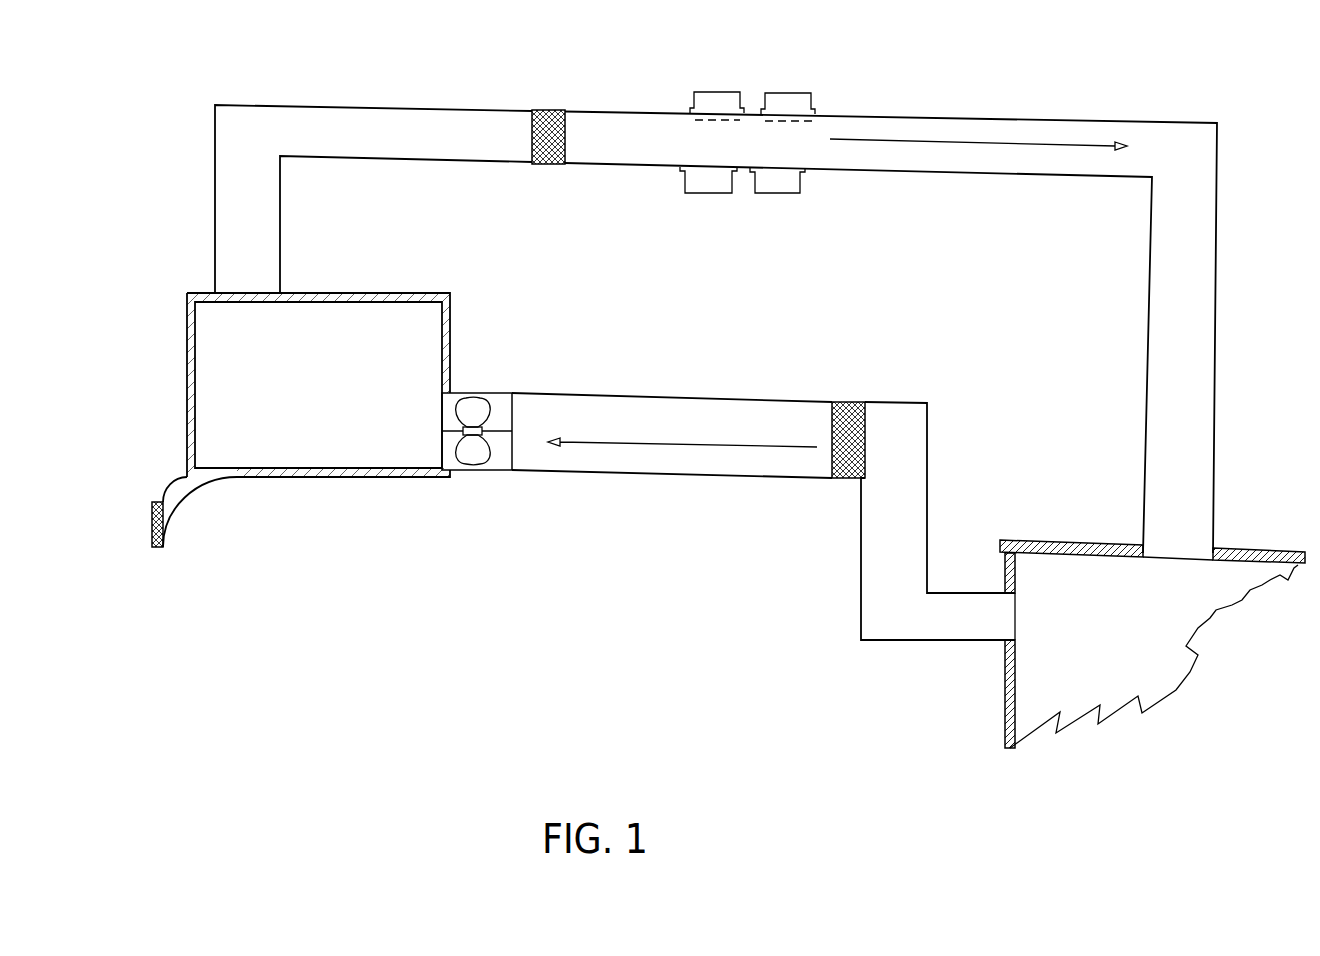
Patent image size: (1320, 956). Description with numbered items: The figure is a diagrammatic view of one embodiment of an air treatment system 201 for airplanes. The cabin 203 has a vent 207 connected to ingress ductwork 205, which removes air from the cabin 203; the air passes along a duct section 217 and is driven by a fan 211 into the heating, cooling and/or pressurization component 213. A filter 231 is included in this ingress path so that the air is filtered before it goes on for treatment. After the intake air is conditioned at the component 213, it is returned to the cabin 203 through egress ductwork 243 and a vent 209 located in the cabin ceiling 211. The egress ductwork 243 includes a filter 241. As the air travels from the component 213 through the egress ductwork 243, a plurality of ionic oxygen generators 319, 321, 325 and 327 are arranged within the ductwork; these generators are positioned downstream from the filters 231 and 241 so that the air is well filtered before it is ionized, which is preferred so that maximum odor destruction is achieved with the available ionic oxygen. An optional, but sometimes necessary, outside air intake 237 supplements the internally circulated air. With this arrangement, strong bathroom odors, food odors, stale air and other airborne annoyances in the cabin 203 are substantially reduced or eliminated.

The air circulation system 201 is at (650, 585).
The cabin 203 is at (1003, 663).
The ingress ductwork 205 is at (967, 590).
The vent 207 is at (1018, 624).
The vent 209 is at (1160, 562).
The cabin ceiling 211 is at (470, 400).
The heating, cooling and/or pressurization component 213 is at (377, 478).
The return duct 217 is at (728, 478).
The filter 231 is at (868, 450).
The outside air intake 237 is at (150, 525).
The filter 241 is at (548, 110).
The egress ductwork 243 is at (318, 105).
The ionic oxygen generator 319 is at (690, 95).
The ionic oxygen generator 321 is at (797, 97).
The ionic oxygen generator 325 is at (700, 192).
The sensor 327 is at (790, 196).